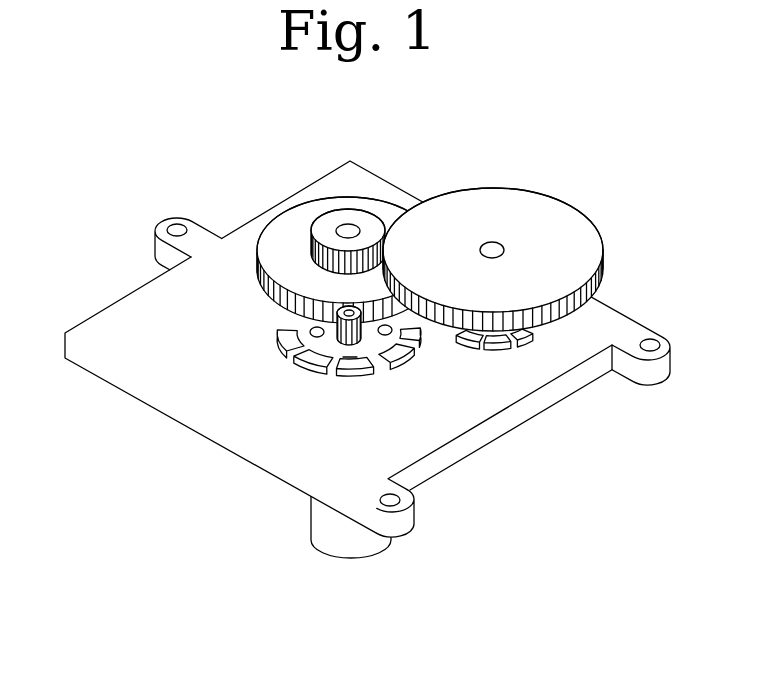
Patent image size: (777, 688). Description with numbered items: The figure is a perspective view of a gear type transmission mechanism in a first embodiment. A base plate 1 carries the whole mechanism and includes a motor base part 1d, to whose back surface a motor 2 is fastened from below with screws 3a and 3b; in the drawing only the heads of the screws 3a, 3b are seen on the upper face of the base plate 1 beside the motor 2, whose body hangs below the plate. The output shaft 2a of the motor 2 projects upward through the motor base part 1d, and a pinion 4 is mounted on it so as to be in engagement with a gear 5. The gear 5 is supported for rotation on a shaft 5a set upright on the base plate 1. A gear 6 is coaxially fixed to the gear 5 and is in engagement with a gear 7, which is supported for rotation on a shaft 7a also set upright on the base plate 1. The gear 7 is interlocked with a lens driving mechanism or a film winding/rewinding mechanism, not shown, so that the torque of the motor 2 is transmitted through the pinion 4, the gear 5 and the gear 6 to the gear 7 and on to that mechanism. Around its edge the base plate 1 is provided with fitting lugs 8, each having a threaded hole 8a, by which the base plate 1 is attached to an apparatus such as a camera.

The base plate 1 is at (153, 323).
The motor base part 1d is at (350, 355).
The motor 2 is at (335, 537).
The output shaft of the motor 2a is at (343, 338).
The screw 3a is at (312, 336).
The screw 3b is at (387, 334).
The pinion 4 is at (370, 348).
The gear 5 is at (285, 240).
The shaft 5a is at (346, 232).
The gear 6 is at (372, 222).
The gear 7 is at (537, 222).
The shaft 7a is at (492, 248).
The fitting lug 8 is at (153, 250).
The threaded hole 8a is at (175, 226).